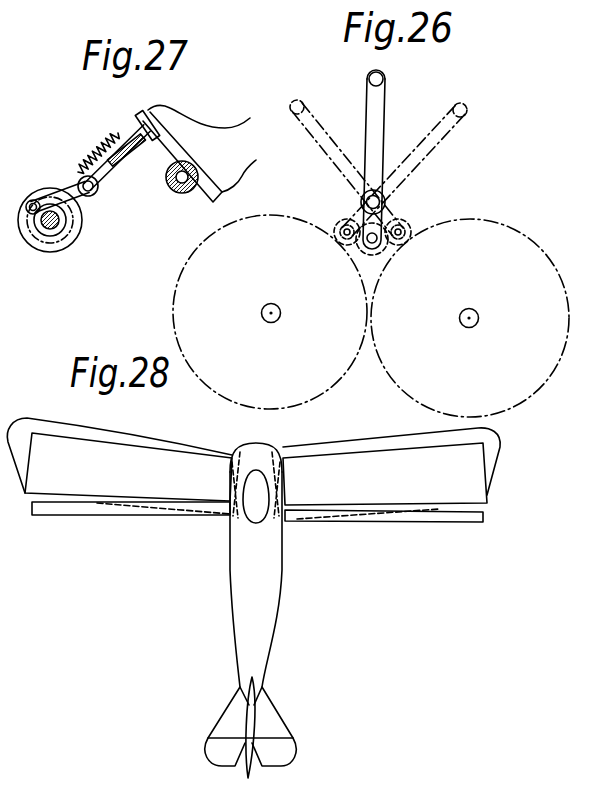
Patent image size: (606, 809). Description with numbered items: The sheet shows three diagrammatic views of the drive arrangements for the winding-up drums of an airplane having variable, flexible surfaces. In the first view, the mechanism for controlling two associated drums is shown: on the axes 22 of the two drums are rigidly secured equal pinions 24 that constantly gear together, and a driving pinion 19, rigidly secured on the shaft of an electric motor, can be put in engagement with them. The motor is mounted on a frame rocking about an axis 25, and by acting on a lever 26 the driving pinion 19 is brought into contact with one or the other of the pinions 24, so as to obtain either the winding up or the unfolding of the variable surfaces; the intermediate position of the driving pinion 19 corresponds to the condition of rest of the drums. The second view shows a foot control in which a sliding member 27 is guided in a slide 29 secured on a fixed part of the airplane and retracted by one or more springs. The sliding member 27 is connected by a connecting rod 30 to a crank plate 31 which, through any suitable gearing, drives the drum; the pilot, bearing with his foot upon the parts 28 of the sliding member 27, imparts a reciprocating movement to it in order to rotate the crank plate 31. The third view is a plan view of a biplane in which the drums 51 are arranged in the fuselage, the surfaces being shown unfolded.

In FIG. 26, the driving pinion 19 is at (384, 240).
In FIG. 26, the axes 22 is at (270, 323).
In FIG. 26, the pinions 24 is at (174, 313).
In FIG. 26, the axis 25 is at (361, 202).
In FIG. 26, the lever 26 is at (376, 108).
In FIG. 27, the sliding member 27 is at (105, 174).
In FIG. 27, the parts 28 is at (138, 126).
In FIG. 27, the slide 29 is at (118, 160).
In FIG. 27, the connecting rod 30 is at (63, 196).
In FIG. 27, the crank plate 31 is at (62, 222).
In FIG. 28, the drums 51 is at (240, 488).